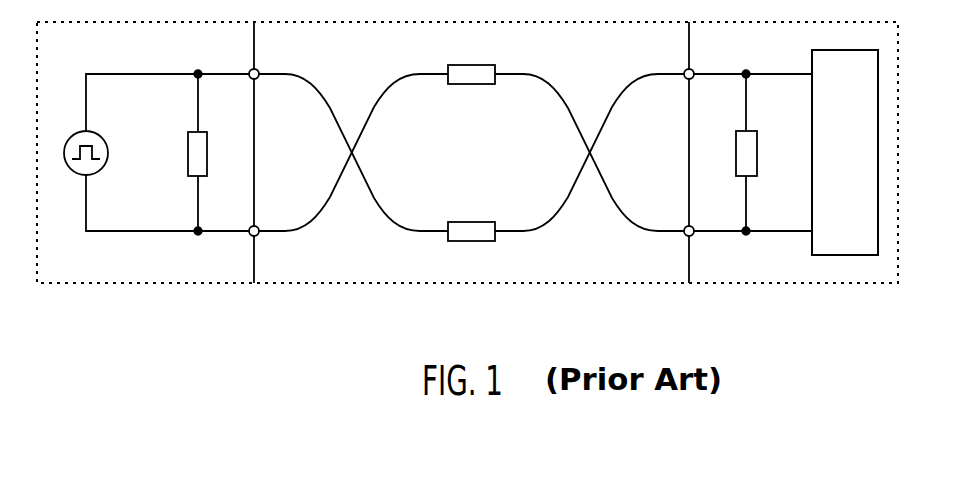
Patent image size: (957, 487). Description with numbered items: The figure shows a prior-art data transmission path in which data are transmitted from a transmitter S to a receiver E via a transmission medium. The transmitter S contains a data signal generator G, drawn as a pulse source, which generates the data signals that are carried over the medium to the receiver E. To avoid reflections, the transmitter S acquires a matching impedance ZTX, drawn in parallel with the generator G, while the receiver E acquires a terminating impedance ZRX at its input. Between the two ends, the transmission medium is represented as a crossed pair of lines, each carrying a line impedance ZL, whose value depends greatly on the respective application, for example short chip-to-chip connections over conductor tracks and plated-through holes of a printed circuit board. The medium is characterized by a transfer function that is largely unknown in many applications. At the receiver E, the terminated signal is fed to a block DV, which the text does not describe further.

The transmitter S is at (152, 135).
The data signal generator G is at (92, 166).
The matching impedance ZTX is at (218, 152).
The line impedance ZL is at (471, 153).
The receiver E is at (781, 152).
The terminating impedance ZRX is at (770, 152).
The differential amplifier / detection unit DV is at (845, 152).